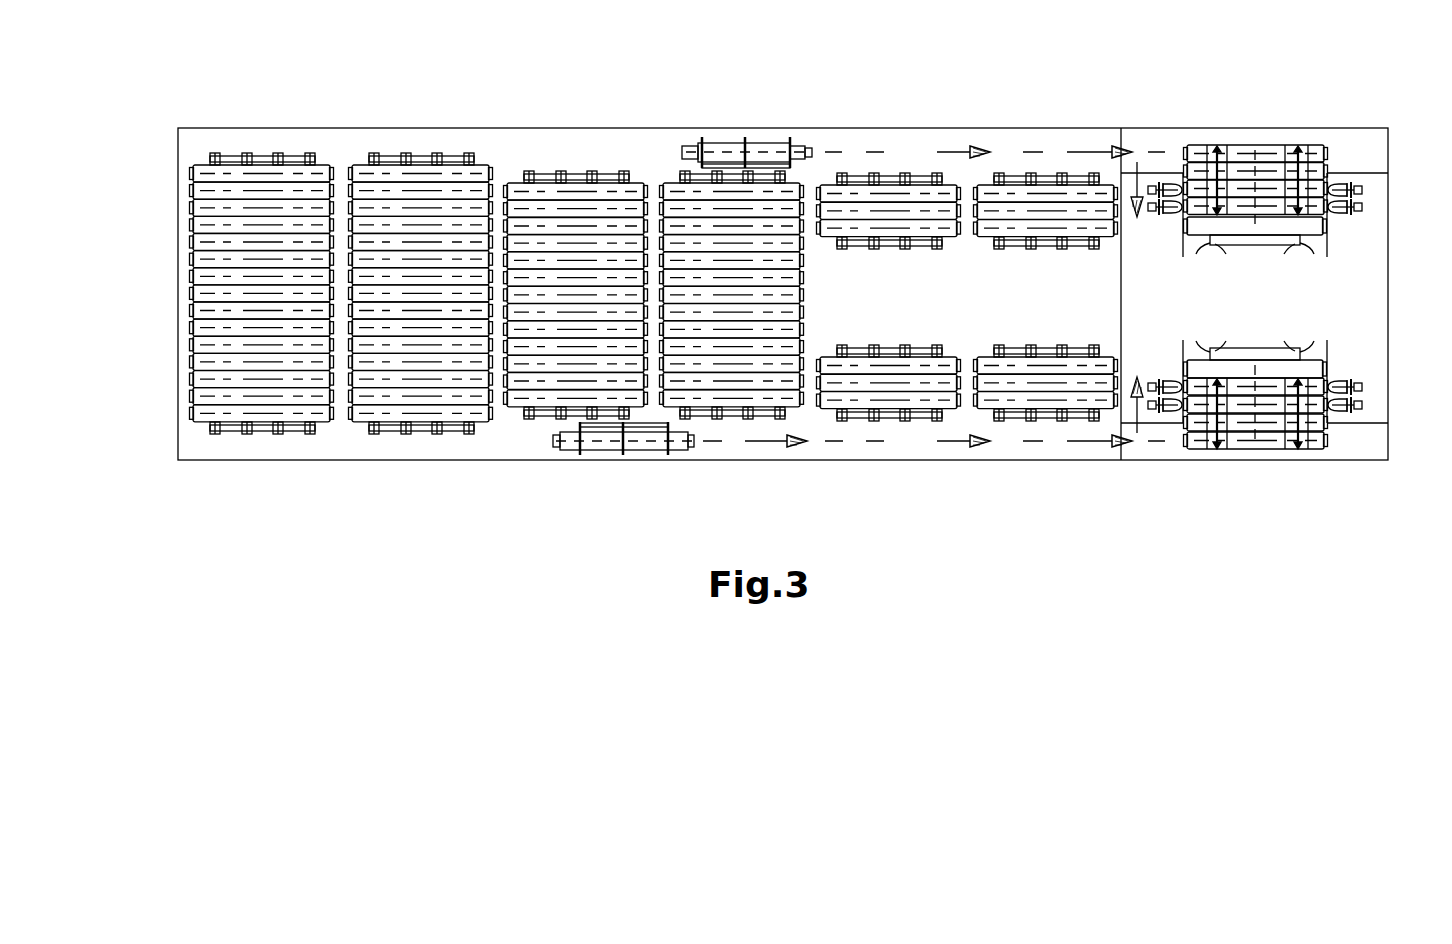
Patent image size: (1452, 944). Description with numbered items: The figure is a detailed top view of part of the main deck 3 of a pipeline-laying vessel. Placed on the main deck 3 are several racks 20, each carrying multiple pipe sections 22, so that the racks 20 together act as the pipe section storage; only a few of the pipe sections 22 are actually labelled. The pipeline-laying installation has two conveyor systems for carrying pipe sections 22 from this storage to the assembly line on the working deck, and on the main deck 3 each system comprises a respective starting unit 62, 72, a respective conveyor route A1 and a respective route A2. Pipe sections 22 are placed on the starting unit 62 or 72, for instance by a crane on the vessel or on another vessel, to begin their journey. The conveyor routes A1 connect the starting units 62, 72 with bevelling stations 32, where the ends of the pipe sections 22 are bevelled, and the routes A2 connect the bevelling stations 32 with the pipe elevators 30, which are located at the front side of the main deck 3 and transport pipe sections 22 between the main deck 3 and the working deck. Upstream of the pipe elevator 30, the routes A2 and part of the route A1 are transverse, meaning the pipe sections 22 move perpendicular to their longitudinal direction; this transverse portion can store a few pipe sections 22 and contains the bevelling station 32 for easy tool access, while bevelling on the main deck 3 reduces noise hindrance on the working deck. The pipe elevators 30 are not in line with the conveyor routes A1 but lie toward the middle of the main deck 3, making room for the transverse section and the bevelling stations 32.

The main deck 3 is at (1373, 254).
The rack 20 is at (610, 237).
The pipe section 22 is at (192, 173).
The pipe elevator 30 is at (1275, 225).
The bevelling station 32 is at (1173, 212).
The starting unit 62 is at (745, 138).
The starting unit 72 is at (623, 456).
The conveyor route A1 is at (872, 152).
The route A2 is at (1139, 217).